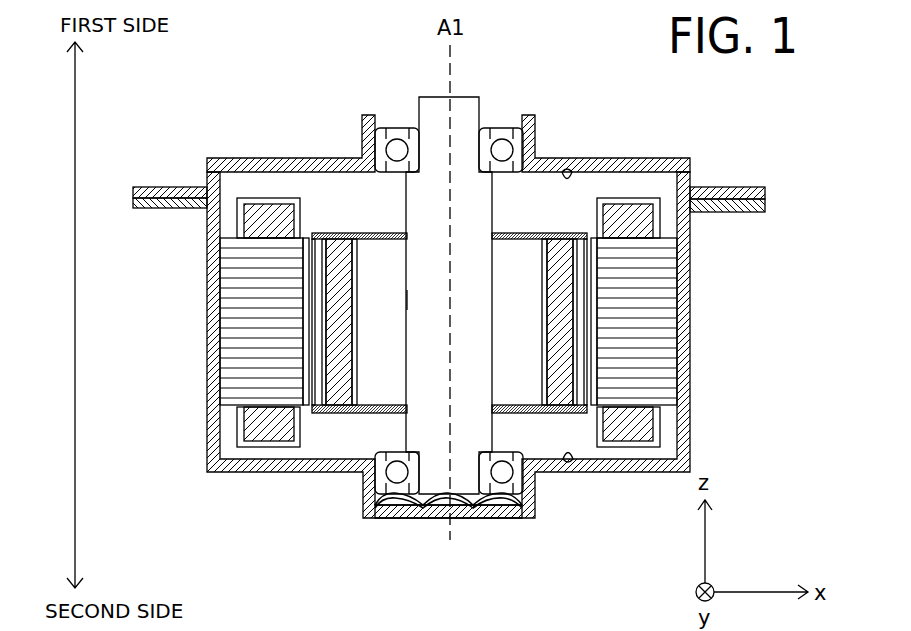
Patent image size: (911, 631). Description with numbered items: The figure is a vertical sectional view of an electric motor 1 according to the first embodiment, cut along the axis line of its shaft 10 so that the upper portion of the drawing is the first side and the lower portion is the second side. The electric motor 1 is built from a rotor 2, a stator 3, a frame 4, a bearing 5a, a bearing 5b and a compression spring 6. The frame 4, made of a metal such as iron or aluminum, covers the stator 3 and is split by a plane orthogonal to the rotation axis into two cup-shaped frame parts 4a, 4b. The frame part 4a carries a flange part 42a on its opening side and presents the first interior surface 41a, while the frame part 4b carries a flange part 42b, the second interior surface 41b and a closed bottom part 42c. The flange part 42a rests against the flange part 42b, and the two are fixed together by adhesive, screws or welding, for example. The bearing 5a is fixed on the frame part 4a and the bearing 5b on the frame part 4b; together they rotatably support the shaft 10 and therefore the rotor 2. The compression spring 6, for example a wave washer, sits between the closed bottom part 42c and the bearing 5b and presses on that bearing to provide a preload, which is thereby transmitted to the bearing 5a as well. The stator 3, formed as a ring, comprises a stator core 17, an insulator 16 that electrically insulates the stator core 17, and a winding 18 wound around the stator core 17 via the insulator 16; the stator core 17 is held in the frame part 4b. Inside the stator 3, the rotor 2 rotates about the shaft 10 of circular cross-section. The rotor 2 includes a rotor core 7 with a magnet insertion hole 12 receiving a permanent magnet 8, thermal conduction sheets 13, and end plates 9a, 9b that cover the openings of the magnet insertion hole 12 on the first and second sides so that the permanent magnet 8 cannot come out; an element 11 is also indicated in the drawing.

The electric motor 1 is at (173, 115).
The rotor 2 is at (142, 218).
The stator 3 is at (790, 263).
The frame 4 is at (868, 143).
The frame part 4a is at (690, 163).
The frame part 4b is at (683, 220).
The bearing 5a is at (502, 148).
The bearing 5b is at (502, 472).
The compression spring 6 is at (408, 513).
The rotor core 7 is at (317, 330).
The permanent magnet 8 is at (342, 392).
The end plate 9a is at (312, 236).
The end plate 9b is at (312, 410).
The shaft 10 is at (430, 432).
The adhesive 11 is at (408, 303).
The magnet insertion hole 12 is at (325, 252).
The thermal conduction sheet 13 is at (322, 360).
The insulator 16 is at (650, 233).
The stator core 17 is at (635, 318).
The winding 18 is at (630, 217).
The interior surface 41a is at (567, 172).
The interior surface 41b is at (568, 460).
The flange part 42a is at (765, 190).
The flange part 42b is at (765, 212).
The closed bottom part 42c is at (468, 508).